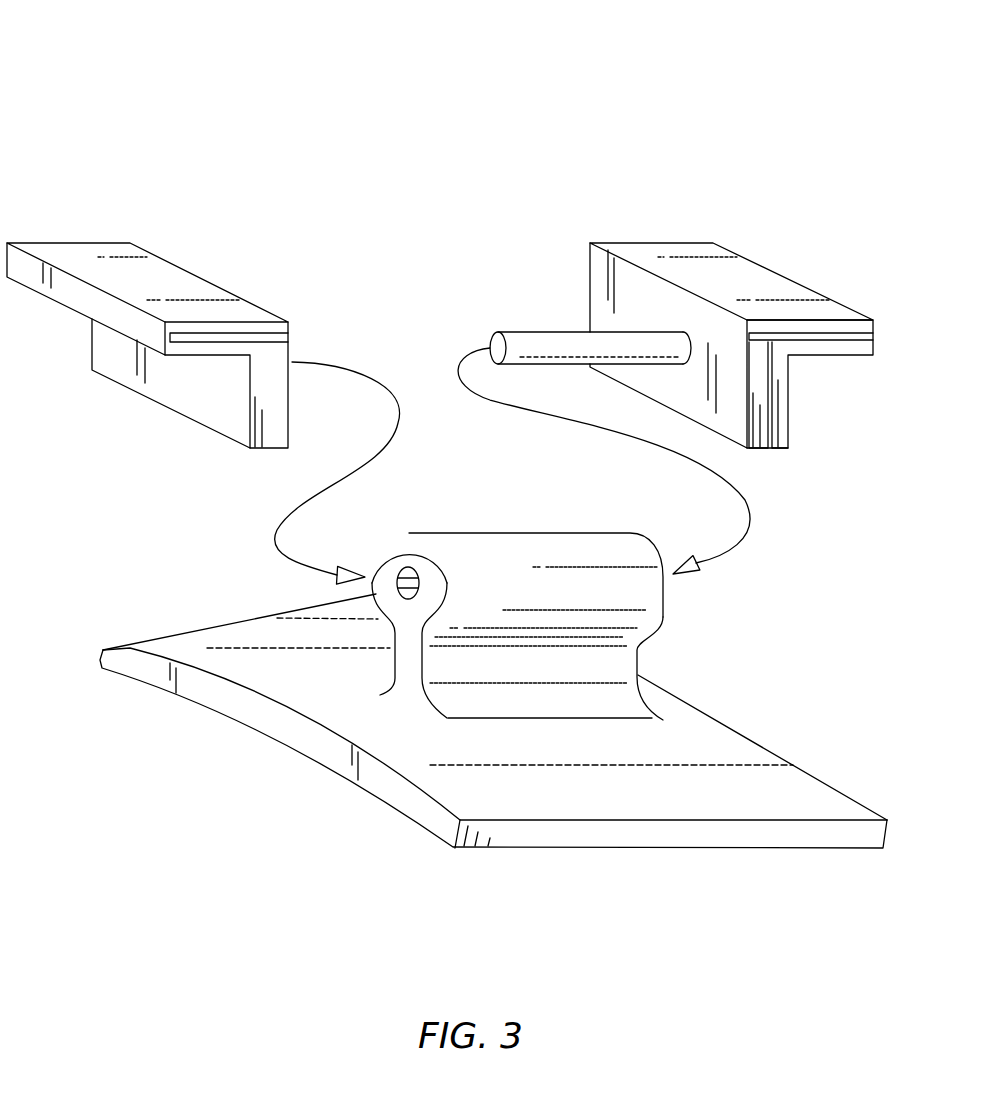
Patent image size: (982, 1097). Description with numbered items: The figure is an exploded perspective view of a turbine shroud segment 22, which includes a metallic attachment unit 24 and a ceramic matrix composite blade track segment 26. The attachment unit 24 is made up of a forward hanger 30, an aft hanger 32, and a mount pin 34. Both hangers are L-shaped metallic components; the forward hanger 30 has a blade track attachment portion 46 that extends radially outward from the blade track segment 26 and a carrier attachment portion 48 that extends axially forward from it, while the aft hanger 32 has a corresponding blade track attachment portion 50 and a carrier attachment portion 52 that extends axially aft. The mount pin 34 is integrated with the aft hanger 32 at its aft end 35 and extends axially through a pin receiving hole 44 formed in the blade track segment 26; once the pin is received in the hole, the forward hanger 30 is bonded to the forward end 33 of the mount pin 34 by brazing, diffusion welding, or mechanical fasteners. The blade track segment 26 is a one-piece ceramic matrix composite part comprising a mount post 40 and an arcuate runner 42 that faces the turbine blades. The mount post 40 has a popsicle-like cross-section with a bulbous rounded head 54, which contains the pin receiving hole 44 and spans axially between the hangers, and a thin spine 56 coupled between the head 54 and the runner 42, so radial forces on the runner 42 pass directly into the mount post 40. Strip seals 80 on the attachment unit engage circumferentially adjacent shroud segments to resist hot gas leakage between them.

The turbine shroud segment 22 is at (86, 86).
The attachment unit 24 is at (243, 160).
The ceramic matrix composite blade track segment 26 is at (234, 818).
The forward hanger 30 is at (123, 213).
The aft hanger 32 is at (607, 205).
The forward end 33 is at (487, 346).
The mount pin 34 is at (526, 315).
The aft end 35 is at (680, 363).
The mount post 40 is at (333, 600).
The runner 42 is at (368, 784).
The pin receiving hole 44 is at (408, 567).
The blade track attachment portion 46 is at (186, 400).
The carrier attachment portion 48 is at (58, 293).
The blade track attachment portion 50 is at (812, 403).
The carrier attachment portion 52 is at (895, 342).
The head 54 is at (684, 595).
The spine 56 is at (659, 660).
The strip seals 80 is at (803, 333).